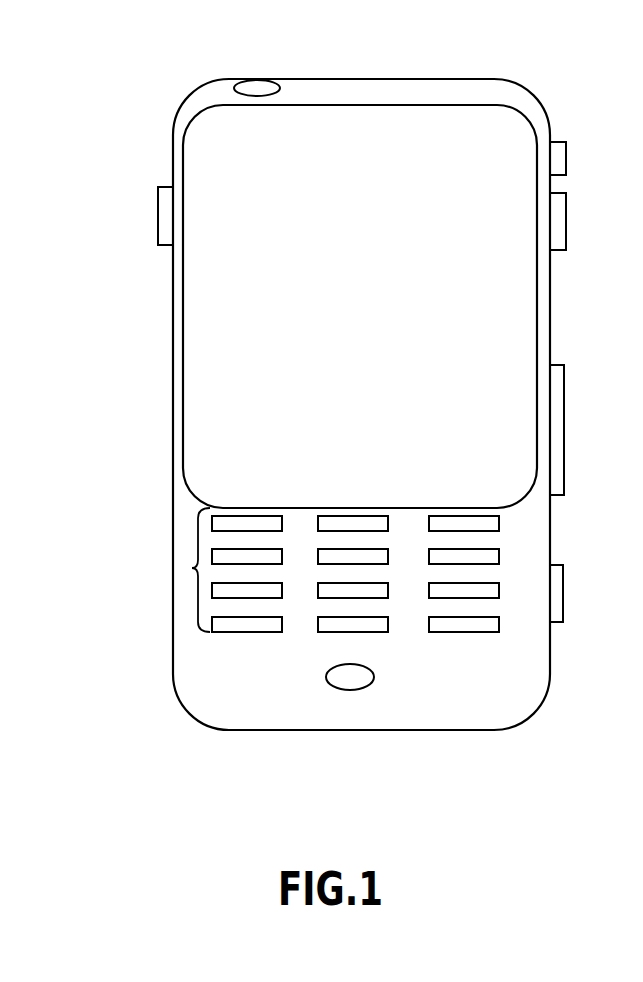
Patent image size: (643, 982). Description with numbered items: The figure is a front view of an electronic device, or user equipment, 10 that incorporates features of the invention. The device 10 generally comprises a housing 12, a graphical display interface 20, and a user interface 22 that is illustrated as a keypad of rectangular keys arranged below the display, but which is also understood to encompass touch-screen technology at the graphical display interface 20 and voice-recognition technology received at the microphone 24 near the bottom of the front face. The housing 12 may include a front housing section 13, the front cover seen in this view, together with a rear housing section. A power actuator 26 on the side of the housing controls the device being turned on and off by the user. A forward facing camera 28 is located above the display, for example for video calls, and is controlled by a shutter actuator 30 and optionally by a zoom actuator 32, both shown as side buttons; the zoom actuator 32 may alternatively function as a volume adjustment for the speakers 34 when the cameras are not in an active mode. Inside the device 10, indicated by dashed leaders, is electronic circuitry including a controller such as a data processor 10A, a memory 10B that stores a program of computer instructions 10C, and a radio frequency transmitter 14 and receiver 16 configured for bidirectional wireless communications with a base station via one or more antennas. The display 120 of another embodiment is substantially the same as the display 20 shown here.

The electronic device 10 is at (551, 734).
The data processor 10A is at (527, 545).
The memory 10B is at (522, 680).
The program of computer instructions 10C is at (190, 500).
The housing 12 is at (530, 93).
The front housing section 13 is at (255, 712).
The radio frequency transmitter 14 is at (190, 625).
The radio frequency receiver 16 is at (195, 675).
The graphical display interface 20 is at (208, 316).
The display 120 is at (360, 306).
The user interface 22 is at (192, 568).
The microphone 24 is at (348, 680).
The power actuator 26 is at (566, 158).
The forward facing camera 28 is at (255, 90).
The shutter actuator 30 is at (565, 585).
The zoom actuator 32 is at (565, 390).
The speaker 34 is at (566, 215).